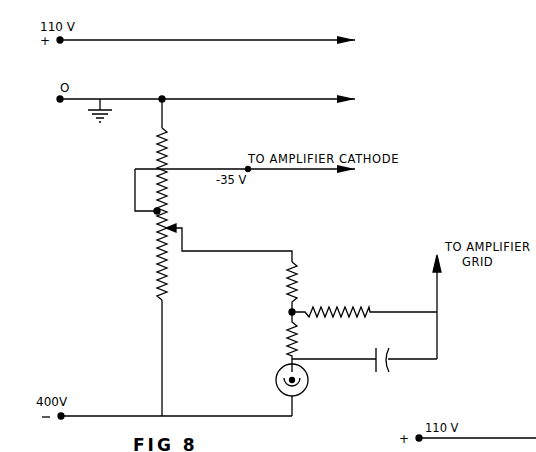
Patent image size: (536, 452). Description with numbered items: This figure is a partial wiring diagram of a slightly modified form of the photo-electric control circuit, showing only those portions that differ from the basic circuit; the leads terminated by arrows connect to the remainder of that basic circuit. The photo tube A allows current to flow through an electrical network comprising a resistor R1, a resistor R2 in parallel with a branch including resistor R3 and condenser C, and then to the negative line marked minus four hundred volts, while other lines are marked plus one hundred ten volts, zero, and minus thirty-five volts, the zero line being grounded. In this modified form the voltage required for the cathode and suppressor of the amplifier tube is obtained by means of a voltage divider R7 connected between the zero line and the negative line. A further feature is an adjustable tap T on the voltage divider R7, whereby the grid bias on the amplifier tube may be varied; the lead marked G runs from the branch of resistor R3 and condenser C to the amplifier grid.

The voltage divider R7 is at (173, 214).
The adjustable tap T is at (229, 242).
The resistor R1 is at (301, 287).
The resistor R2 is at (301, 338).
The resistor R3 is at (364, 303).
The grid terminal G to amplifier grid G is at (442, 307).
The condenser C is at (364, 351).
The photo tube A is at (260, 390).